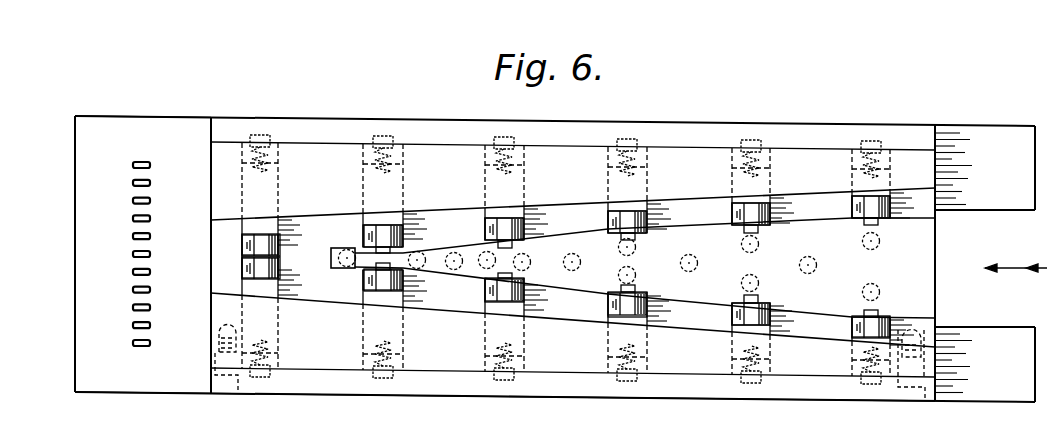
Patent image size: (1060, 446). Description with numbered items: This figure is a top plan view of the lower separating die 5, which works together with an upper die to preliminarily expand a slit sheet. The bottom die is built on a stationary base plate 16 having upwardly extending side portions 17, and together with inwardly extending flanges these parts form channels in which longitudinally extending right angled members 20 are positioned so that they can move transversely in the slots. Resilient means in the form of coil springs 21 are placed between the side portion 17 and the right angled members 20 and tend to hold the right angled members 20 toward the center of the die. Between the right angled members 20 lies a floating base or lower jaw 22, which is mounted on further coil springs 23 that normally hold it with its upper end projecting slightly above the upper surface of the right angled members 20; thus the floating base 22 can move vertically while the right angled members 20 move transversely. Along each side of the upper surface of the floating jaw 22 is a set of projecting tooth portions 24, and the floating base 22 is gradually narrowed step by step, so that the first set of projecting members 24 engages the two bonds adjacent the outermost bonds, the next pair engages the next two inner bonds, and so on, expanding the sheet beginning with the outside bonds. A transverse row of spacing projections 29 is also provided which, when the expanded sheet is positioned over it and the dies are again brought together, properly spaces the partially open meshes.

The separating die 5 is at (850, 125).
The stationary base plate 16 is at (173, 383).
The side portion 17 is at (550, 388).
The right angled member 20 is at (873, 330).
The coil spring 21 is at (386, 134).
The floating base 22 is at (822, 232).
The coil spring 23 is at (808, 276).
The projecting tooth portion 24 is at (879, 308).
The spacing projection 29 is at (147, 160).